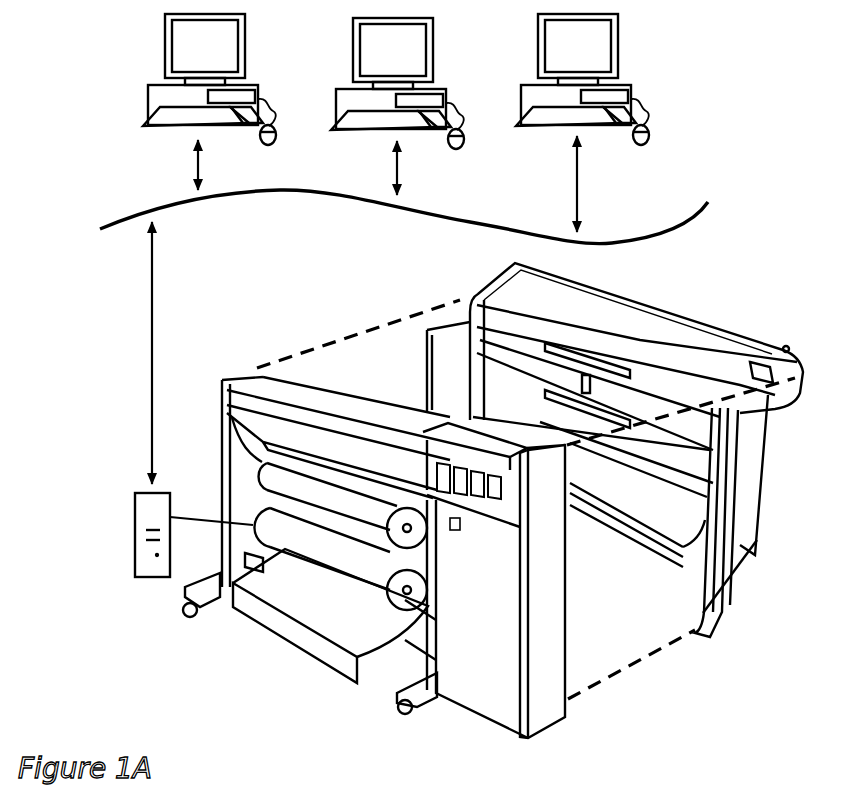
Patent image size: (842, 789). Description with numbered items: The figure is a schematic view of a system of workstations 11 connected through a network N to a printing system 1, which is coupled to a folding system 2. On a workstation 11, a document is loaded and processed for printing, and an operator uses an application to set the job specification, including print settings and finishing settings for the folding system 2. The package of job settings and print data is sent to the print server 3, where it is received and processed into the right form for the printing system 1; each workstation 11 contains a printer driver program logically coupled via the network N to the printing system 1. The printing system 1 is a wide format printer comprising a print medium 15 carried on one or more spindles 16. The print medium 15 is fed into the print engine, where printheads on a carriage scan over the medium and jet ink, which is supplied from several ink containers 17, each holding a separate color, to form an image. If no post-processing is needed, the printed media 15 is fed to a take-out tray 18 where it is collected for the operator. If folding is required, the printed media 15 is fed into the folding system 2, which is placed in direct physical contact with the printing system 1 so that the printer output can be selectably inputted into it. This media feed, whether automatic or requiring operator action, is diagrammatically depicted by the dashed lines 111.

The workstation 11 is at (145, 92).
The network N is at (677, 228).
The printing system 1 is at (240, 337).
The folding system 2 is at (750, 318).
The print server 3 is at (143, 580).
The feed device 111 is at (390, 322).
The print medium 15 is at (268, 455).
The spindle 16 is at (411, 532).
The ink container 17 is at (490, 507).
The take-out tray 18 is at (287, 633).